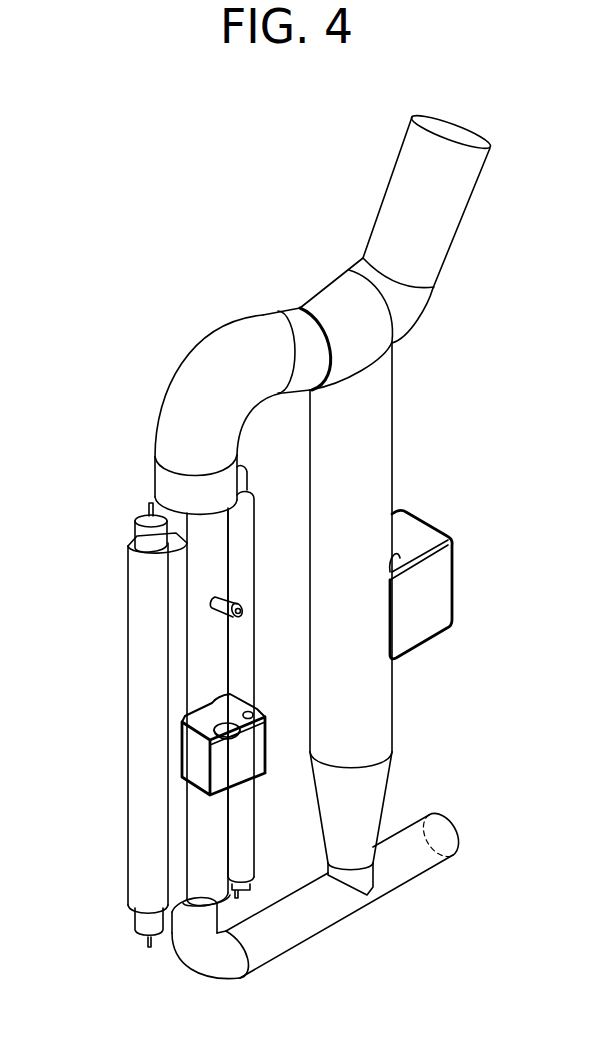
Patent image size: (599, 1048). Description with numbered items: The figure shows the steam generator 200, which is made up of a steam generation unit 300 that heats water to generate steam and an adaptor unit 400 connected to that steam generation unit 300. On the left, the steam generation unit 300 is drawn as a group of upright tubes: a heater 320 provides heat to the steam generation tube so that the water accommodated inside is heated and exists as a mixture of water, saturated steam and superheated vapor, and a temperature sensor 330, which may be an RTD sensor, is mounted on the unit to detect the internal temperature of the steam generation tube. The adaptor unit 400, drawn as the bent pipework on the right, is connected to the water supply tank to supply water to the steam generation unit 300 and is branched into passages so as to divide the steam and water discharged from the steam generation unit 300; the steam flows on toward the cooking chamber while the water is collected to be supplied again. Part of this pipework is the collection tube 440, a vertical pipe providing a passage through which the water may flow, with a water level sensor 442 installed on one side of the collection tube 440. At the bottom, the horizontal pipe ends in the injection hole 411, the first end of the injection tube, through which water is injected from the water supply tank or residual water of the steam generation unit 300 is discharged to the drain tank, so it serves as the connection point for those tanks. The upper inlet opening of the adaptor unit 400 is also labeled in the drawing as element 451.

The steam generator 200 is at (98, 136).
The steam generation unit 300 is at (106, 661).
The heater 320 is at (136, 878).
The temperature sensor 330 is at (192, 753).
The adaptor unit 400 is at (337, 521).
The injection hole 411 is at (452, 837).
The collection tube 440 is at (378, 440).
The water level sensor 442 is at (433, 583).
The inlet pipe 451 is at (453, 134).